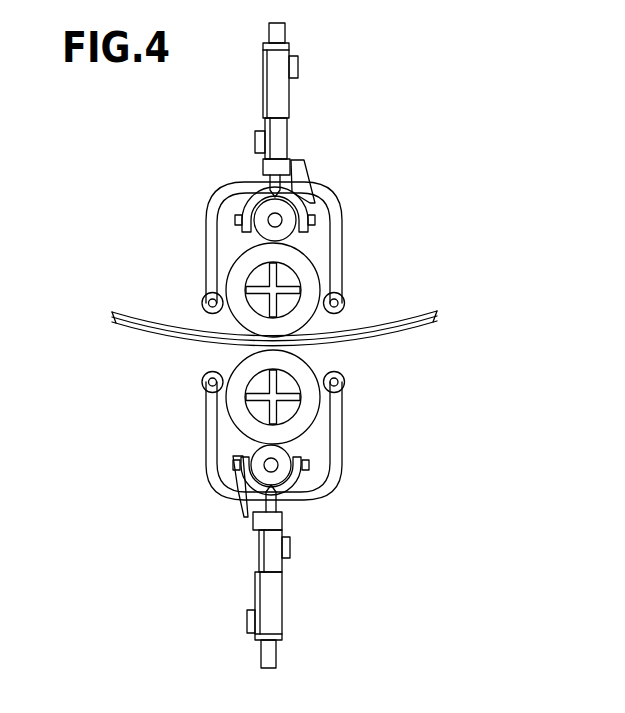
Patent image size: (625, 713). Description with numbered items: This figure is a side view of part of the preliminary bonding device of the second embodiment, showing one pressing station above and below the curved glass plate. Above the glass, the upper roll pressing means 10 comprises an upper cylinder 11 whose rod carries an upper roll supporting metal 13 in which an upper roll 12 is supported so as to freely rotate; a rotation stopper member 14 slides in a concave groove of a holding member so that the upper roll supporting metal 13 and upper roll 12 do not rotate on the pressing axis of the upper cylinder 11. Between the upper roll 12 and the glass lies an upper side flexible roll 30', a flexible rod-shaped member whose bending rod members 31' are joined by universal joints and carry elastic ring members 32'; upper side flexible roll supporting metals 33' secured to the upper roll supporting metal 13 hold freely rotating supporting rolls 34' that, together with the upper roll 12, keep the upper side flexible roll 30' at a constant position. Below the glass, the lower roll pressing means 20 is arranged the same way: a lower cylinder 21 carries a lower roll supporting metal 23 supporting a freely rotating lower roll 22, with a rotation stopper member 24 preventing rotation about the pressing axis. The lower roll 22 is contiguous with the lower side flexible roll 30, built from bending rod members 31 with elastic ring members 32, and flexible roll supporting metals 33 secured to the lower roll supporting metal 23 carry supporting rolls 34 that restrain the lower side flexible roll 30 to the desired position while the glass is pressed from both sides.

The upper roll pressing means 10 is at (351, 62).
The upper cylinder 11 is at (278, 97).
The upper roll 12 is at (285, 232).
The upper roll supporting metal 13 is at (248, 198).
The rotation stopper member 14 is at (306, 196).
The lower roll pressing means 20 is at (404, 503).
The lower cylinder 21 is at (277, 593).
The lower roll 22 is at (286, 473).
The lower roll supporting metal 23 is at (303, 493).
The rotation stopper member 24 is at (236, 491).
The lower side flexible roll 30 is at (293, 396).
The upper side flexible roll 30' is at (285, 275).
The bending rod member 31 is at (224, 386).
The bending rod member 31' is at (225, 272).
The elastic ring member 32 is at (231, 422).
The elastic ring member 32' is at (240, 234).
The flexible roll supporting metal 33 is at (310, 441).
The upper side flexible roll supporting metal 33' is at (326, 242).
The supporting roll 34 is at (267, 394).
The supporting roll 34' is at (282, 295).